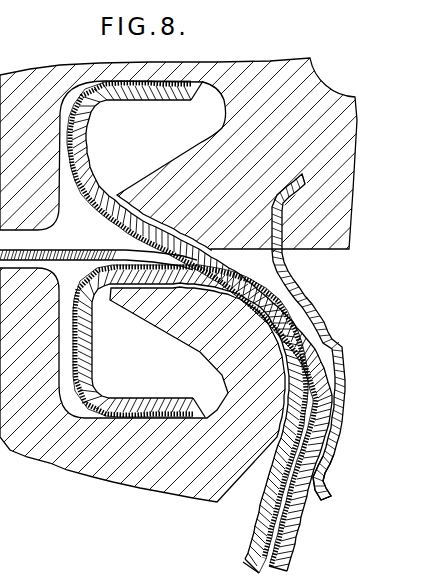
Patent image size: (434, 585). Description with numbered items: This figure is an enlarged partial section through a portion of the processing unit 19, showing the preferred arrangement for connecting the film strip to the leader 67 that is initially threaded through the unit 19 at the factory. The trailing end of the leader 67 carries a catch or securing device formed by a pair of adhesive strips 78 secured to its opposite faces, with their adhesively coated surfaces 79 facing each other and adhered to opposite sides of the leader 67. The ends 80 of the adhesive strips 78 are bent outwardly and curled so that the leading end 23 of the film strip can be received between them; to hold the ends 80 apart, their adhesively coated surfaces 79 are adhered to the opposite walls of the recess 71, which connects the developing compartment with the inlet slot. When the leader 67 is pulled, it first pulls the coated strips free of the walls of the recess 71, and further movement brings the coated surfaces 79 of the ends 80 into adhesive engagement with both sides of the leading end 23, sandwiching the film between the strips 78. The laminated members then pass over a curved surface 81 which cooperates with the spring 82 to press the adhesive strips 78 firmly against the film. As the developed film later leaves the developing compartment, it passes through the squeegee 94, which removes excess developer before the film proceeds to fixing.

The processing unit 19 is at (217, 292).
The leading end of the film strip 23 is at (98, 251).
The leader 67 is at (253, 573).
The recess 71 is at (145, 249).
The adhesive strips 78 is at (243, 539).
The adhesively coated surfaces 79 is at (85, 196).
The ends of the adhesive strips 80 is at (78, 152).
The curved surface 81 is at (295, 290).
The spring 82 is at (327, 338).
The squeegee 94 is at (367, 584).